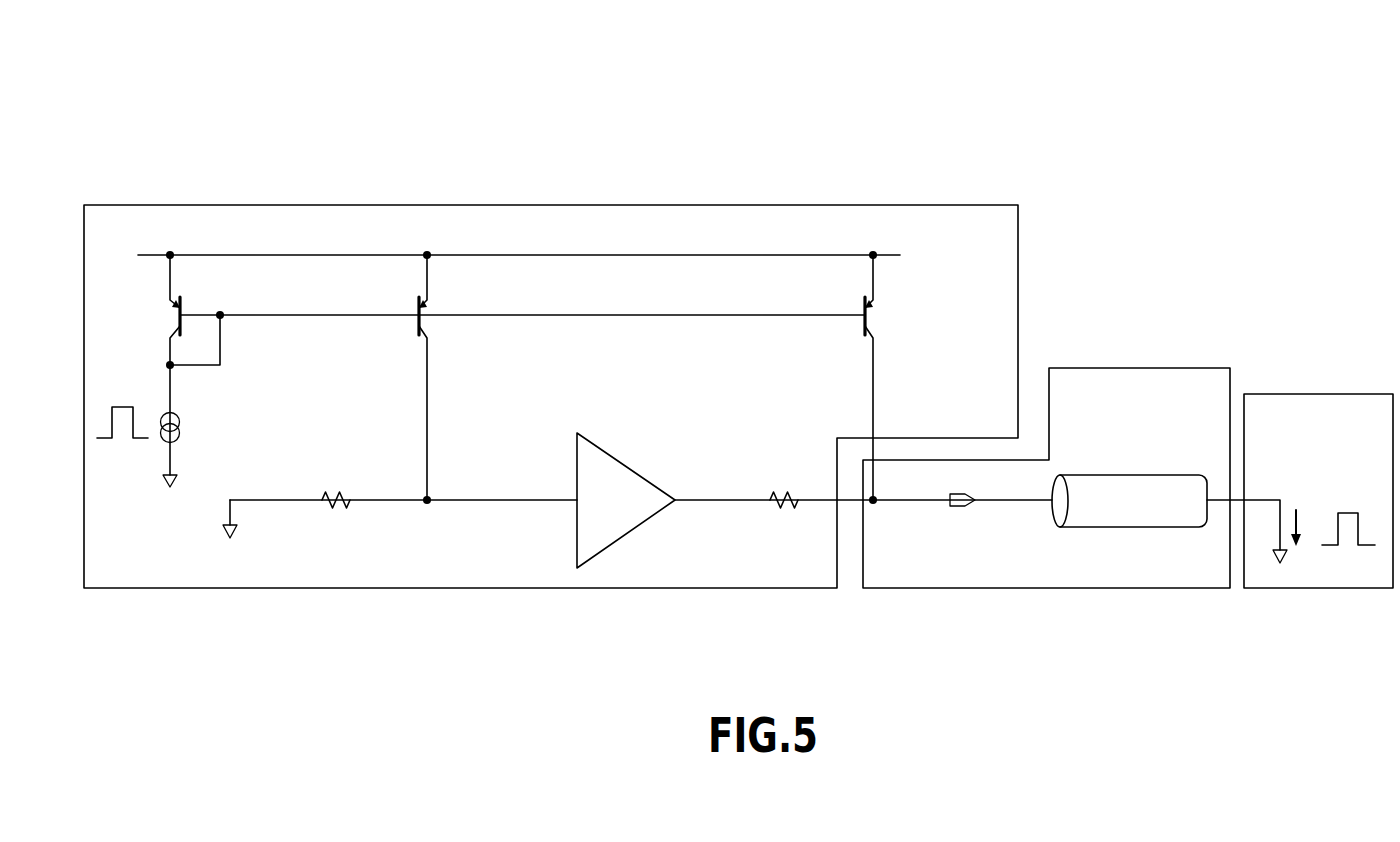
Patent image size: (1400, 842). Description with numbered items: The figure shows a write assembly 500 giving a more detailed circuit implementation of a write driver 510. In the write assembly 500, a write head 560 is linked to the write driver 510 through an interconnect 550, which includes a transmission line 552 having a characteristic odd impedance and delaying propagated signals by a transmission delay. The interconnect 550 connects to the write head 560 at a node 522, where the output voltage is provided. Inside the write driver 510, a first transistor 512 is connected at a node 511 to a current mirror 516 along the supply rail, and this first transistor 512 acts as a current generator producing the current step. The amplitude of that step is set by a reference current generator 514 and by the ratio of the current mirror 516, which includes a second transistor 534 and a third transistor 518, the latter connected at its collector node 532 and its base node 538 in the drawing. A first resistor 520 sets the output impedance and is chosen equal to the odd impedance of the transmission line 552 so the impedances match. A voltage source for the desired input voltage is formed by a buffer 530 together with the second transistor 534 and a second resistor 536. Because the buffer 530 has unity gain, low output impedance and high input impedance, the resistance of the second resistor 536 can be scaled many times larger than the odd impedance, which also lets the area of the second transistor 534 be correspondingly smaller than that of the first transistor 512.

The write assembly 500 is at (206, 146).
The write driver 510 is at (380, 205).
The node 511 is at (876, 255).
The transistor Q1 512 is at (912, 288).
The reference current generator IREF1 514 is at (185, 428).
The current mirror 516 is at (246, 238).
The transistor Q13 518 is at (173, 317).
The resistor 520 is at (781, 462).
The node 522 is at (876, 503).
The buffer 530 is at (576, 457).
The collector node of transistor Q9 532 is at (430, 254).
The transistor Q9 534 is at (417, 333).
The resistor 536 is at (355, 475).
The node between R3 and buffer 538 is at (429, 498).
The interconnect 550 is at (1140, 368).
The transmission line 552 is at (1153, 475).
The write head 560 is at (1288, 394).